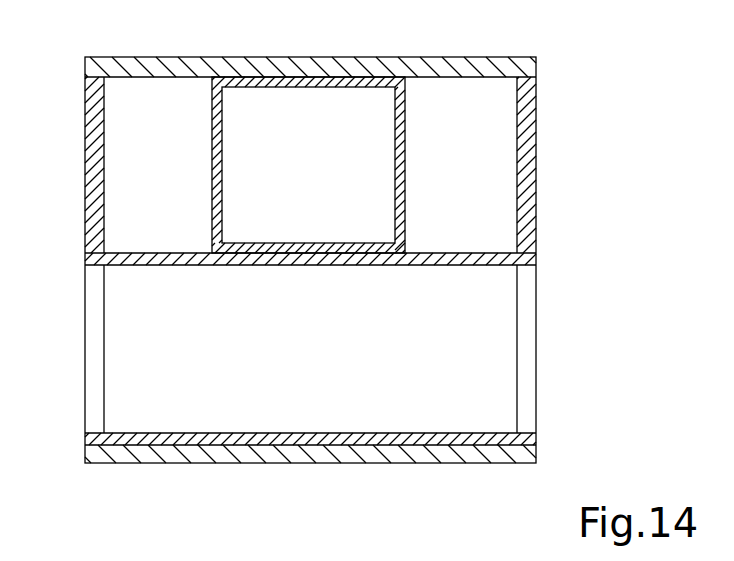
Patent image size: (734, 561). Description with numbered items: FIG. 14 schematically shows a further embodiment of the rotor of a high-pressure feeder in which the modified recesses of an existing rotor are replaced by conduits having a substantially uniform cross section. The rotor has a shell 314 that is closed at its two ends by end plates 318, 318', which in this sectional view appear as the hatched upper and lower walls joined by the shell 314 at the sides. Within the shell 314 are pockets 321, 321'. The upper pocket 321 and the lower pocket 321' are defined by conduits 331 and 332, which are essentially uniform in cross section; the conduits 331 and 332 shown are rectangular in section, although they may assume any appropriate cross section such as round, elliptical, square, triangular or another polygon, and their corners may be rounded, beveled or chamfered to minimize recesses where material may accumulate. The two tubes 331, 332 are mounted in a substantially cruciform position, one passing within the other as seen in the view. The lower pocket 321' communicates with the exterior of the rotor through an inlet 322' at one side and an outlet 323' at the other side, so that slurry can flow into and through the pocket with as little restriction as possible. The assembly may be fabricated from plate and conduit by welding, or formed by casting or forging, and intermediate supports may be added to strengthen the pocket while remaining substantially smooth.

The shell 314 is at (535, 162).
The end plate 318 is at (310, 49).
The pocket 321 is at (405, 128).
The conduit 331 is at (215, 177).
The conduit 332 is at (422, 250).
The inlet 322' is at (68, 349).
The outlet 323' is at (565, 349).
The pocket 321' is at (180, 455).
The end plate 318' is at (310, 473).